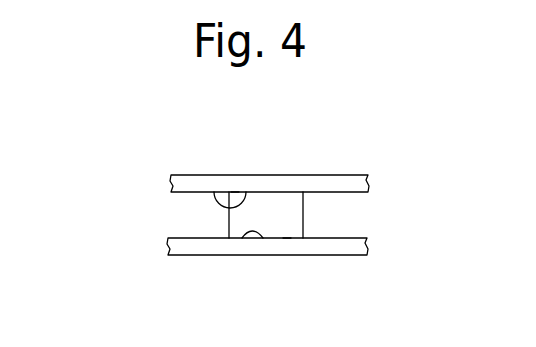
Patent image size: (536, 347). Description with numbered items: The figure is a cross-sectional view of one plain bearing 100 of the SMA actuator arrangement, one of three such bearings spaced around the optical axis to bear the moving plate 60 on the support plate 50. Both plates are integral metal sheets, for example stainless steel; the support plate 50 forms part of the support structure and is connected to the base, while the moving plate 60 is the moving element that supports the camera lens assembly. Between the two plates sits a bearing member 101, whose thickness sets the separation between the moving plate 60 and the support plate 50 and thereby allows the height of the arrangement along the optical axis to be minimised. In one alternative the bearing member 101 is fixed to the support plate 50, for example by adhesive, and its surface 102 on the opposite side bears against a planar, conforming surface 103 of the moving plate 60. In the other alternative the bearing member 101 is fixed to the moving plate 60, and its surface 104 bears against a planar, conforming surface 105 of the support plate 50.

The plain bearing 100 is at (148, 207).
The bearing member 101 is at (287, 202).
The surface of the bearing member 102 is at (214, 192).
The surface of the moving plate 103 is at (237, 193).
The surface of the bearing member 104 is at (242, 238).
The surface of the support plate 105 is at (287, 238).
The moving plate 60 is at (342, 182).
The support plate 50 is at (347, 247).